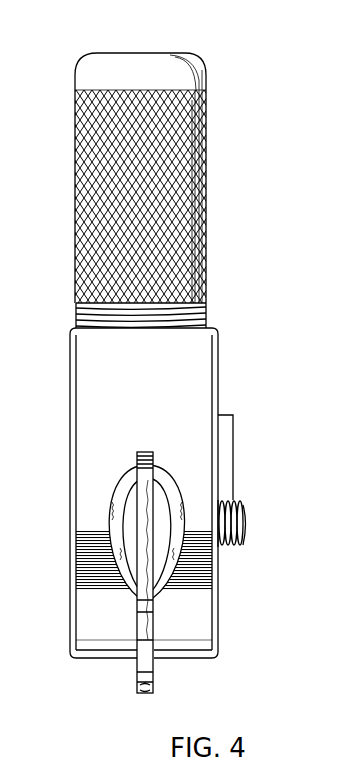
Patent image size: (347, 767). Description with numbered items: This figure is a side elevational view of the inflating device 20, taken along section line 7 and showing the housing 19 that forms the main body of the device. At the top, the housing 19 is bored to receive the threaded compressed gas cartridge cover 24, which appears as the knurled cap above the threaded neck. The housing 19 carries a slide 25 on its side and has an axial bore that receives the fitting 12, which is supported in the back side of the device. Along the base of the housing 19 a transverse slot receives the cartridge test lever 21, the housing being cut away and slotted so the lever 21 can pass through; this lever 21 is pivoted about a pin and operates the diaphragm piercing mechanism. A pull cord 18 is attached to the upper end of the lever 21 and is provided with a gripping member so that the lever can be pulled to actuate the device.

The section line 7- 7 is at (137, 75).
The fitting 12 is at (245, 508).
The pull cord 18 is at (0, 652).
The housing 19 is at (68, 350).
The inflating device 20 is at (224, 365).
The cartridge test lever 21 is at (144, 452).
The threaded compressed gas cartridge cover 24 is at (97, 200).
The slide 25 is at (228, 432).